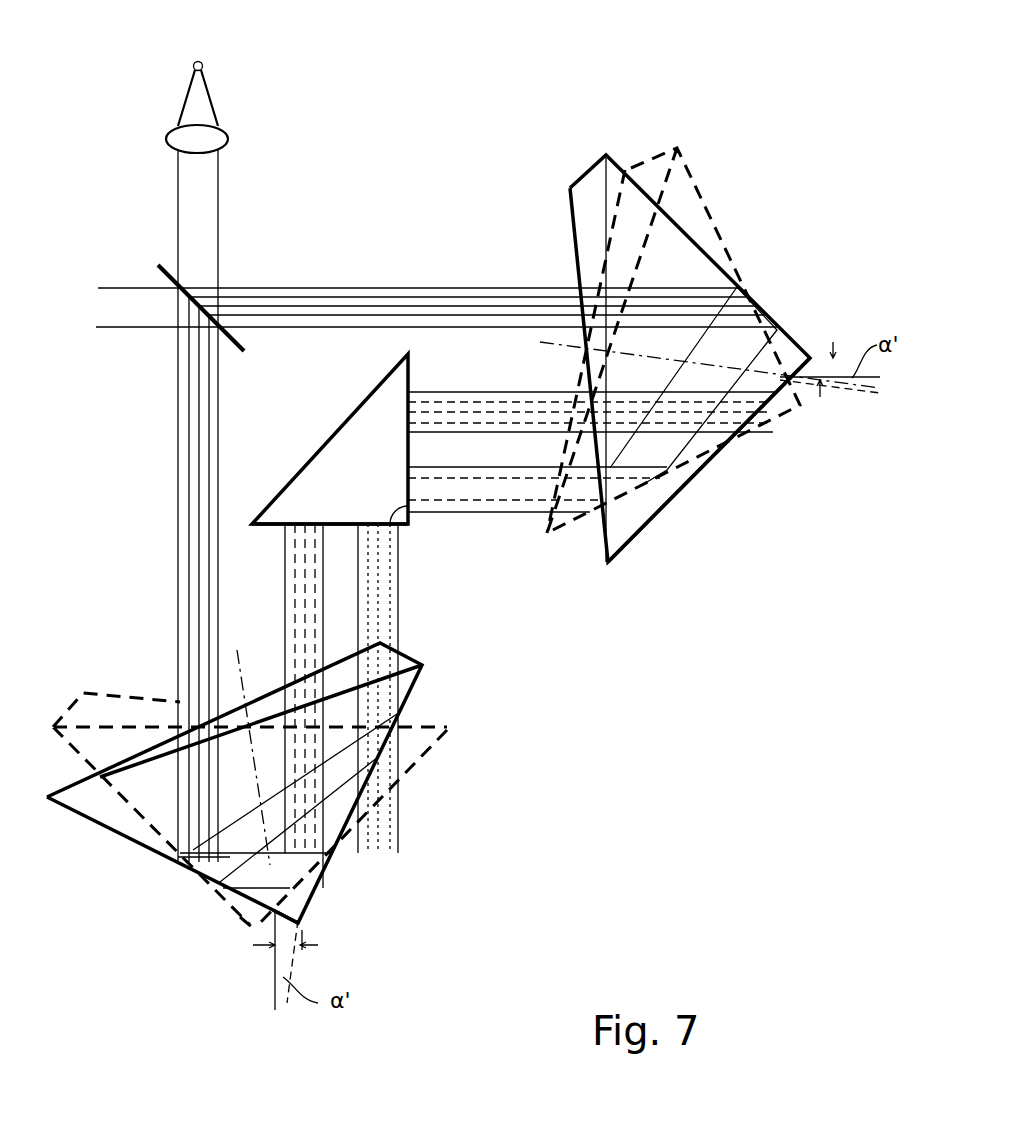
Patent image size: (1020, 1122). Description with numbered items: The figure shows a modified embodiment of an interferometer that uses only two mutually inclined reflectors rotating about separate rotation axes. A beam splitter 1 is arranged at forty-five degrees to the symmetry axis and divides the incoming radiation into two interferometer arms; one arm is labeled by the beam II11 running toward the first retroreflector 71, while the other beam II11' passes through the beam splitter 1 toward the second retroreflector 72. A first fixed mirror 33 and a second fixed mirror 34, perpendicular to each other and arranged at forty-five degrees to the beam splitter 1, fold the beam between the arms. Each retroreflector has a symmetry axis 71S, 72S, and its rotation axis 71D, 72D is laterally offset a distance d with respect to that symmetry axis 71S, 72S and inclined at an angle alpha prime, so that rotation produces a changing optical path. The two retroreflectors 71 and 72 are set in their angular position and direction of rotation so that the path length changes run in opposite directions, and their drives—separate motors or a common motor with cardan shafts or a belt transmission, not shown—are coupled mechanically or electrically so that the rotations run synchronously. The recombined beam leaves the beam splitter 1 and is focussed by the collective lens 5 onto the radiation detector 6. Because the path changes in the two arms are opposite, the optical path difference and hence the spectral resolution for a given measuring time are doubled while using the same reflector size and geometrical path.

The beam splitter 1 is at (158, 268).
The collective lens 5 is at (186, 142).
The radiation detector 6 is at (196, 63).
The first fixed mirror 33 is at (331, 439).
The second fixed mirror 34 is at (330, 512).
The retroreflector 71 is at (675, 150).
The symmetry axis 71S is at (812, 357).
The rotation axis 71D is at (852, 388).
The retroreflector 72 is at (423, 665).
The symmetry axis 72S is at (302, 925).
The rotation axis 72D is at (284, 1000).
The light beam II11 is at (437, 271).
The light beam II11' is at (135, 559).